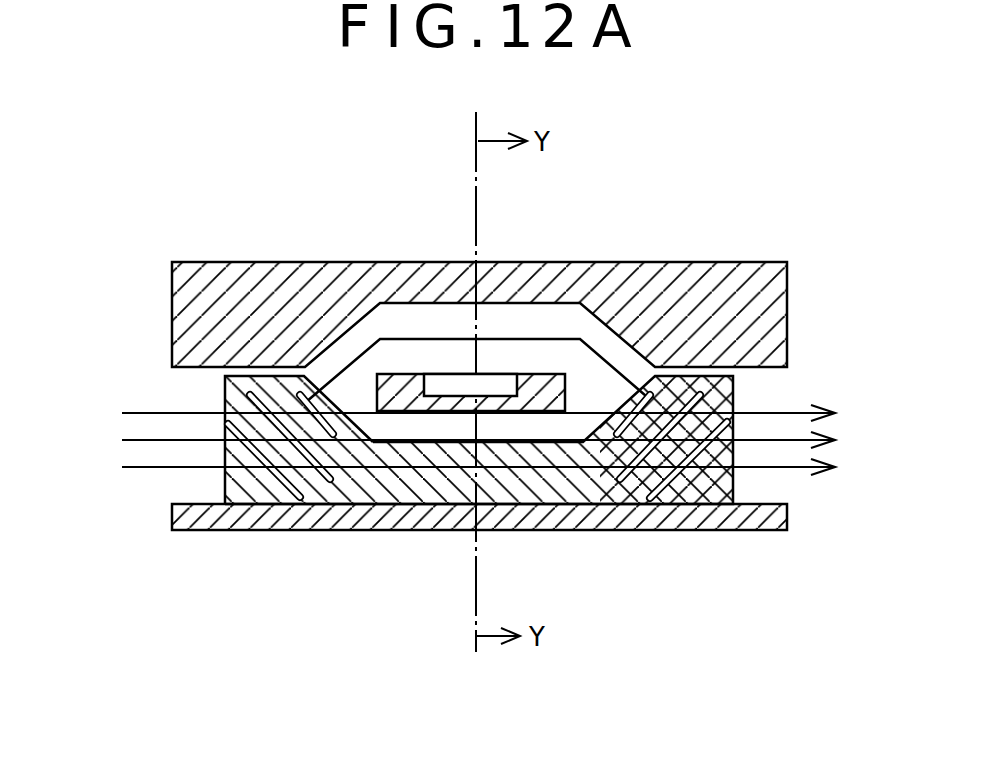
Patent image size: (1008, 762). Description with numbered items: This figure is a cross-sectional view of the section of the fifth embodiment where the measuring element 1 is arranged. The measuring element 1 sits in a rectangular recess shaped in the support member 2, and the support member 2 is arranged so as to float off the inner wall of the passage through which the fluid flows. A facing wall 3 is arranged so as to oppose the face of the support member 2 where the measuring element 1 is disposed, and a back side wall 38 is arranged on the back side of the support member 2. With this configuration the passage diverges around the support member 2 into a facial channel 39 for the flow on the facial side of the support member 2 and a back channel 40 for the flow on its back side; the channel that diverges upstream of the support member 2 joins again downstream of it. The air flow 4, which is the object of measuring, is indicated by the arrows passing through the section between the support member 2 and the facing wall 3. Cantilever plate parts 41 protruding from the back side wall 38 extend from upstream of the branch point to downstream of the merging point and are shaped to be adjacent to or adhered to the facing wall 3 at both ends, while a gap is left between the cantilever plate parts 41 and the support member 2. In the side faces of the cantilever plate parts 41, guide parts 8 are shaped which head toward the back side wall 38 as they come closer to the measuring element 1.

The measuring element 1 is at (456, 386).
The support member 2 is at (384, 372).
The facing wall 3 is at (279, 294).
The air flow 4 is at (138, 438).
The guide parts 8 is at (299, 455).
The back side wall 38 is at (357, 517).
The facial channel 39 is at (519, 330).
The back channel 40 is at (504, 427).
The cantilever plate parts 41 is at (247, 487).